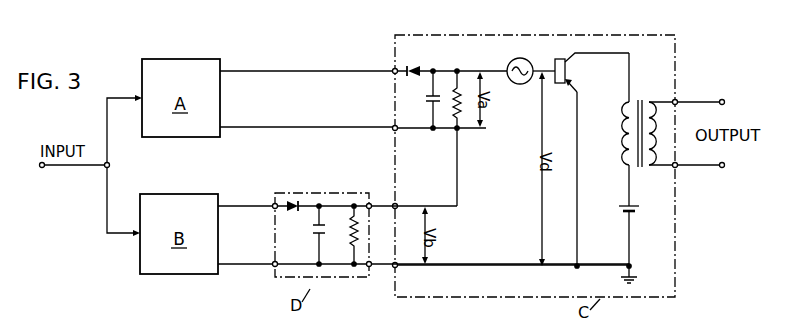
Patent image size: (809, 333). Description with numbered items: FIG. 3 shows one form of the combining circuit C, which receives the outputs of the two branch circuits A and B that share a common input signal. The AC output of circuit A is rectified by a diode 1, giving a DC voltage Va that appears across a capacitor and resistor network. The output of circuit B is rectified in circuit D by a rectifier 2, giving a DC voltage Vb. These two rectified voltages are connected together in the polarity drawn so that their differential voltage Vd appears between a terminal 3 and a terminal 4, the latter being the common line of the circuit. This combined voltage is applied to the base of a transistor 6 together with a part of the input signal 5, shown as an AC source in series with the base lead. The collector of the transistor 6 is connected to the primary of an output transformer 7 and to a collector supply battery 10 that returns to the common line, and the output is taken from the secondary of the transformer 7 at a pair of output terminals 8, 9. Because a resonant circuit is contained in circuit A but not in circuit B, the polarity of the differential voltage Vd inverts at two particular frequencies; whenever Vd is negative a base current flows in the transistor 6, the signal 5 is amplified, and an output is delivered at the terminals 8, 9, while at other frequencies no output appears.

The diode 1 is at (419, 64).
The rectifier 2 is at (293, 200).
The terminal 3 is at (460, 90).
The terminal 4 is at (514, 277).
The input signal 5 is at (531, 65).
The transistor 6 is at (558, 85).
The output transformer 7 is at (643, 101).
The output terminal 8 is at (724, 98).
The output terminal 9 is at (725, 168).
The collector supply battery 10 is at (641, 232).